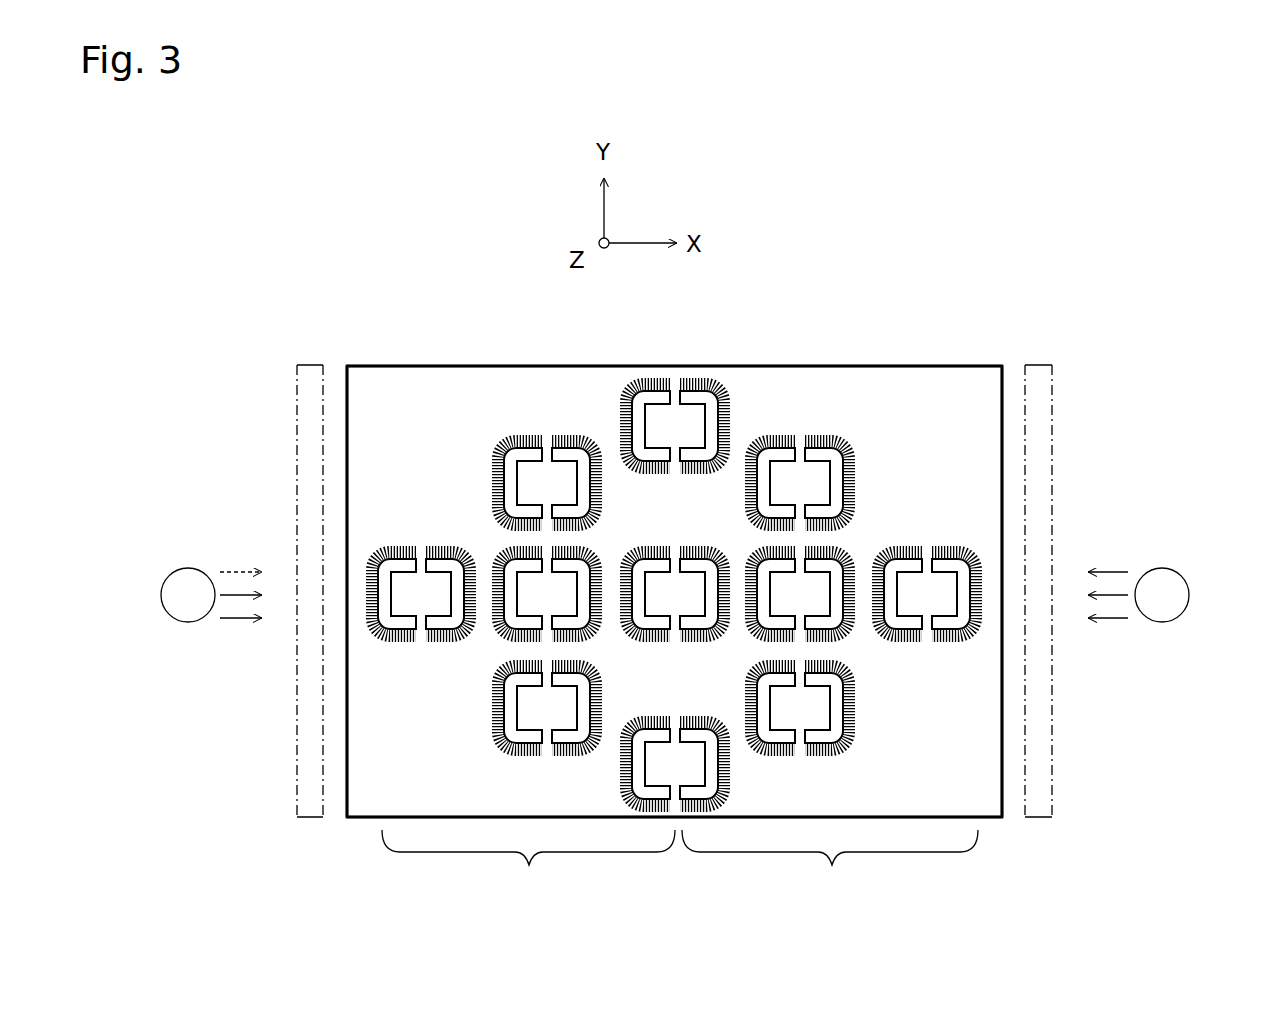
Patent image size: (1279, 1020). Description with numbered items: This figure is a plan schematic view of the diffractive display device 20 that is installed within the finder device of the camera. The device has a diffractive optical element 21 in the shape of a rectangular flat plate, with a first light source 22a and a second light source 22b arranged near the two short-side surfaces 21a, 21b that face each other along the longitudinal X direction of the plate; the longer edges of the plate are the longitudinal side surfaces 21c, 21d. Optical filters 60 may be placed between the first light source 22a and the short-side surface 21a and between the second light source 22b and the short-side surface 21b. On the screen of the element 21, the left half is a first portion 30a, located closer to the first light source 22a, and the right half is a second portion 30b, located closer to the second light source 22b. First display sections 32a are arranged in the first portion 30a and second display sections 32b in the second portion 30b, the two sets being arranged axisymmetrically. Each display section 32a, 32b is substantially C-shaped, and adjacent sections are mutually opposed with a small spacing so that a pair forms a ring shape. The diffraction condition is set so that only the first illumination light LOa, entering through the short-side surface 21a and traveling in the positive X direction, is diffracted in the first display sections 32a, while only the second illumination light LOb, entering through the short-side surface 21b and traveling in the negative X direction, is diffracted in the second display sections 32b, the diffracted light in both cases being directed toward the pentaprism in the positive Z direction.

The diffractive display device 20 is at (1017, 315).
The diffractive optical element 21 is at (851, 364).
The short-side surface 21a is at (347, 541).
The short-side surface 21b is at (1003, 570).
The longitudinal side surface 21c is at (458, 366).
The longitudinal side surface 21d is at (990, 818).
The first light source 22a is at (175, 620).
The second light source 22b is at (1170, 568).
The first portion 30a is at (528, 867).
The second portion 30b is at (830, 866).
The first display section 32a is at (438, 545).
The second display section 32b is at (820, 435).
The optical filter 60 is at (297, 395).
The first illumination light LOa is at (230, 625).
The second illumination light LOb is at (1112, 628).